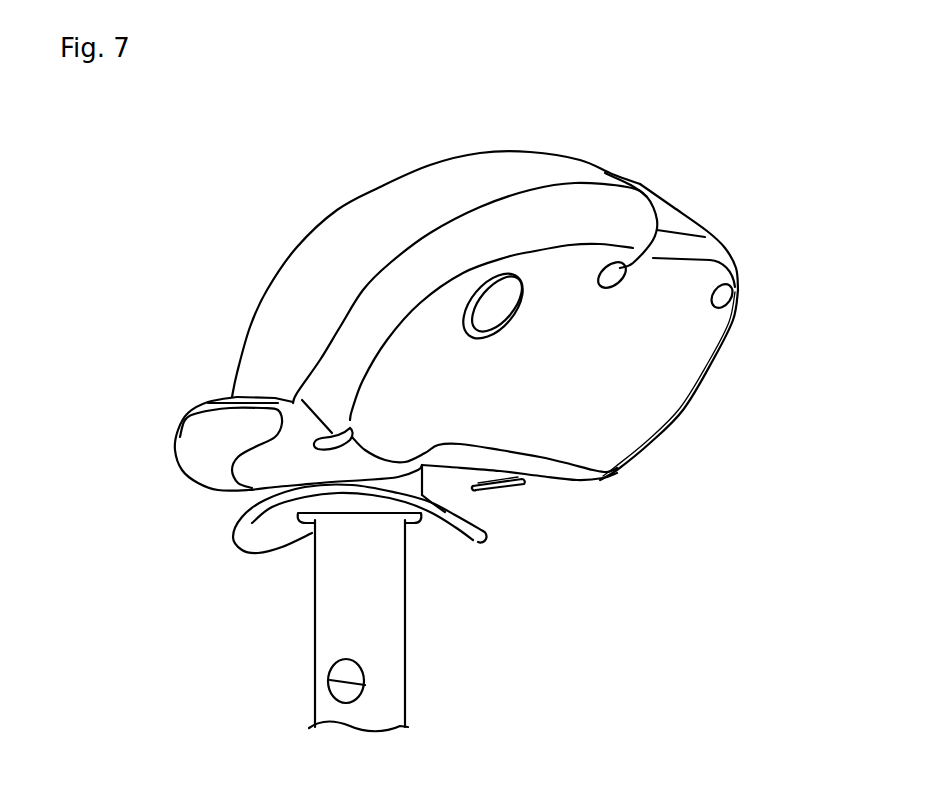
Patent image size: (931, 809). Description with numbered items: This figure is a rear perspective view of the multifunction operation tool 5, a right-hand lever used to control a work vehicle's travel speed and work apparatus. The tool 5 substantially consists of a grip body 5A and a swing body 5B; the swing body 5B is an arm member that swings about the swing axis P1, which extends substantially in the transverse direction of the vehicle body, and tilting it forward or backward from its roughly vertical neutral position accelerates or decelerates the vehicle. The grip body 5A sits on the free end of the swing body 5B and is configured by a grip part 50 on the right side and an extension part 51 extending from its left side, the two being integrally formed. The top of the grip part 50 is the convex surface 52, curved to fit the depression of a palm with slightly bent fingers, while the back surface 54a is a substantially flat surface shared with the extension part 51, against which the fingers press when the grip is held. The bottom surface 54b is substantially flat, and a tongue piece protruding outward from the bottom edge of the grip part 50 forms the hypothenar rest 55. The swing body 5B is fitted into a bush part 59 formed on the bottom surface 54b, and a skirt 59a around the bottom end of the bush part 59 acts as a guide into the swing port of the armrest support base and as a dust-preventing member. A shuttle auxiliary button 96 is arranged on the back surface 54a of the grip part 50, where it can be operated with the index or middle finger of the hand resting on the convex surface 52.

The multifunction operation tool 5 is at (130, 220).
The grip body 5A is at (627, 483).
The swing body 5B is at (407, 645).
The grip part 50 is at (250, 330).
The extension part 51 is at (707, 223).
The convex surface 52 is at (365, 205).
The back surface 54a is at (647, 377).
The bottom surface 54b is at (457, 472).
The hypothenar rest 55 is at (222, 398).
The bush part 59 is at (345, 503).
The skirt 59a is at (485, 534).
The shuttle auxiliary button 96 is at (503, 320).
The swing axis P1 is at (313, 678).